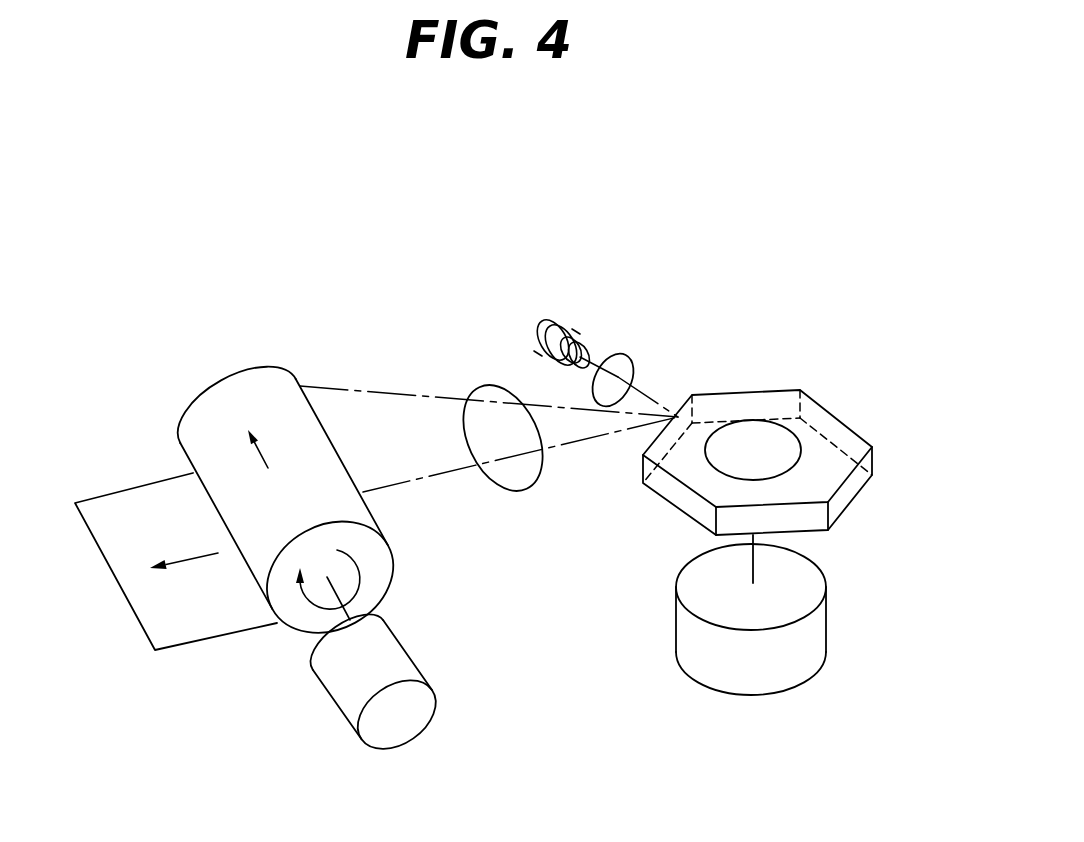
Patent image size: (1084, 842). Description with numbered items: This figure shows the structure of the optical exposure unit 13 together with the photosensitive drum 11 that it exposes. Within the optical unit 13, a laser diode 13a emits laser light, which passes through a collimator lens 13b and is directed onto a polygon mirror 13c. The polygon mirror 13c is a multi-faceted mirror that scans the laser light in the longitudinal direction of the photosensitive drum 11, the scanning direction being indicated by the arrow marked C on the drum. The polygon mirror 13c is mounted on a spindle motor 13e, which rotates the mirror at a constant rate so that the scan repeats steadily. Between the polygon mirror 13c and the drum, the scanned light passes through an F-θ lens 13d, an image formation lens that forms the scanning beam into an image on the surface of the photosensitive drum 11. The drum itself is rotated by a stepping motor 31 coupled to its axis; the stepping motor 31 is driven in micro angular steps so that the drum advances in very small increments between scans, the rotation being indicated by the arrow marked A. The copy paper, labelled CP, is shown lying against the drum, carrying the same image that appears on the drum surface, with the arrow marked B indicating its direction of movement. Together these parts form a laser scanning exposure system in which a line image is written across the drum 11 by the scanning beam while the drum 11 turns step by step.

The photosensitive drum 11 is at (250, 372).
The optical exposure unit 13 is at (605, 437).
The laser diode 13a is at (572, 340).
The collimator lens 13b is at (618, 353).
The polygon mirror 13c is at (843, 418).
The F-θ lens 13d is at (530, 482).
The spindle motor 13e is at (803, 648).
The stepping motor 31 is at (407, 662).
The copy paper CP is at (198, 633).